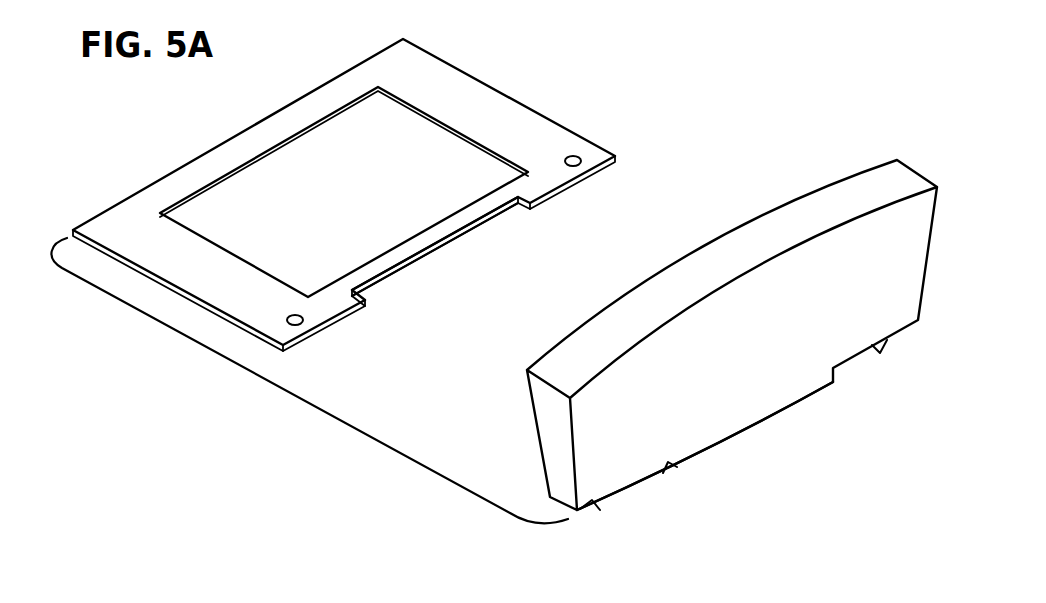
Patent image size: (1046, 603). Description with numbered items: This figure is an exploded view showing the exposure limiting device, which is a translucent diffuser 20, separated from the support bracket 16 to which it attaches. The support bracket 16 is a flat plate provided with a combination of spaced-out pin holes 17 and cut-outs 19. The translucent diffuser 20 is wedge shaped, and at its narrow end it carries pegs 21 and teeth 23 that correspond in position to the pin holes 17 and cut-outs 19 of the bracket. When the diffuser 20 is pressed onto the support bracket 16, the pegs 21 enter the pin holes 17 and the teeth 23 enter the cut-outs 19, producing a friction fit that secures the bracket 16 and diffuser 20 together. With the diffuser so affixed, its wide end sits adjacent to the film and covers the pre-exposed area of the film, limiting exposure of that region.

The support bracket 16 is at (500, 108).
The pin holes 17 is at (580, 155).
The cut-outs 19 is at (403, 268).
The translucent diffuser 20 is at (799, 208).
The pegs 21 is at (597, 508).
The teeth 23 is at (753, 427).